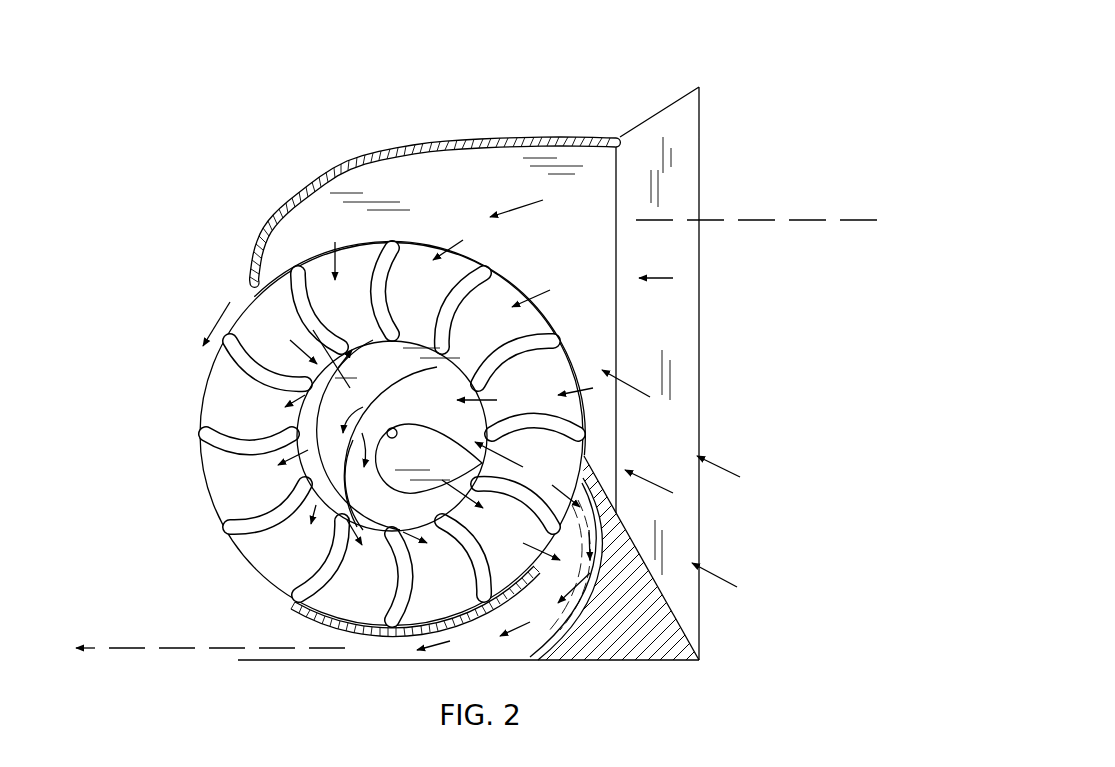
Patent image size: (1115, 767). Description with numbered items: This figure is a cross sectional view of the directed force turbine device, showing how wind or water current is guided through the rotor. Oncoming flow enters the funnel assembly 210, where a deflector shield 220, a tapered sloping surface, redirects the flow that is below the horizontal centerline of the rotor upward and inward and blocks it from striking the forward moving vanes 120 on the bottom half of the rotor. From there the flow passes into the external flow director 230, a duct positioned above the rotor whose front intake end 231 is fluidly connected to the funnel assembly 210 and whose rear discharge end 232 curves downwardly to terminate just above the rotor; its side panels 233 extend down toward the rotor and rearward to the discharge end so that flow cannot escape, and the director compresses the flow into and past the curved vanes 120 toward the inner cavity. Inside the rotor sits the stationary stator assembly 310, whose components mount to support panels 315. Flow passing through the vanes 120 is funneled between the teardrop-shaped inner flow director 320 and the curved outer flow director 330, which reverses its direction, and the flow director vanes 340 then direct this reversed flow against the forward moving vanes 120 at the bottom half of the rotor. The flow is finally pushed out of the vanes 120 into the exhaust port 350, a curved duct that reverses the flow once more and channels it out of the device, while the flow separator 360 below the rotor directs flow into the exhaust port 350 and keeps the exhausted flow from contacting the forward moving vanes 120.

The vanes 120 is at (333, 385).
The funnel assembly 210 is at (699, 167).
The deflector shield 220 is at (680, 625).
The external flow director 230 is at (348, 157).
The front (intake) end 231 is at (619, 137).
The rear (discharge) end 232 is at (257, 248).
The side panels 233 is at (505, 186).
The stator assembly 310 is at (447, 420).
The support panels 315 is at (447, 372).
The inner flow director 320 is at (385, 472).
The outer flow director 330 is at (256, 297).
The flow director vanes 340 is at (353, 500).
The exhaust port 350 is at (567, 617).
The flow separator 360 is at (290, 604).